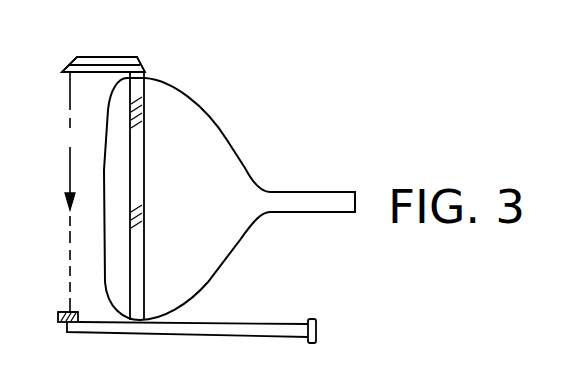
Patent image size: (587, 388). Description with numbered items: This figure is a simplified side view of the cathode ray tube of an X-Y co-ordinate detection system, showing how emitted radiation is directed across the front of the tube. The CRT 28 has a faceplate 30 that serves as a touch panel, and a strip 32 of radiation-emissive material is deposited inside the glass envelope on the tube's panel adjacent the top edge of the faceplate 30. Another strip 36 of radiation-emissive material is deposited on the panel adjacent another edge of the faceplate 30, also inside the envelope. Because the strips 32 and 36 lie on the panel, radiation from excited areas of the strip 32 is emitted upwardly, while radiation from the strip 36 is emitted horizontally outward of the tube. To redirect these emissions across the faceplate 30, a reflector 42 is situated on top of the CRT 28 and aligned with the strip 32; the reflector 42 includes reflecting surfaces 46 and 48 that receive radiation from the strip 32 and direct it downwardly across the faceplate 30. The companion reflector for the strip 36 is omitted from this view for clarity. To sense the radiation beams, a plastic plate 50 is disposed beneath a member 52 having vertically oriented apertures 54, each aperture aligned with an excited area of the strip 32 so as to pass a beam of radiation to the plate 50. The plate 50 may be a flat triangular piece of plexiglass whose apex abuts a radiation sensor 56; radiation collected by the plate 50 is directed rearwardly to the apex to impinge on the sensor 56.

The CRT 28 is at (233, 233).
The faceplate 30 is at (103, 177).
The strip of radiation-emissive material 32 is at (147, 73).
The strip of radiation-emissive material 36 is at (135, 220).
The reflector 42 is at (122, 57).
The reflecting surface 46 is at (148, 68).
The reflecting surface 48 is at (76, 57).
The plastic plate 50 is at (67, 332).
The member 52 is at (60, 315).
The apertures 54 is at (63, 312).
The radiation sensor 56 is at (312, 319).